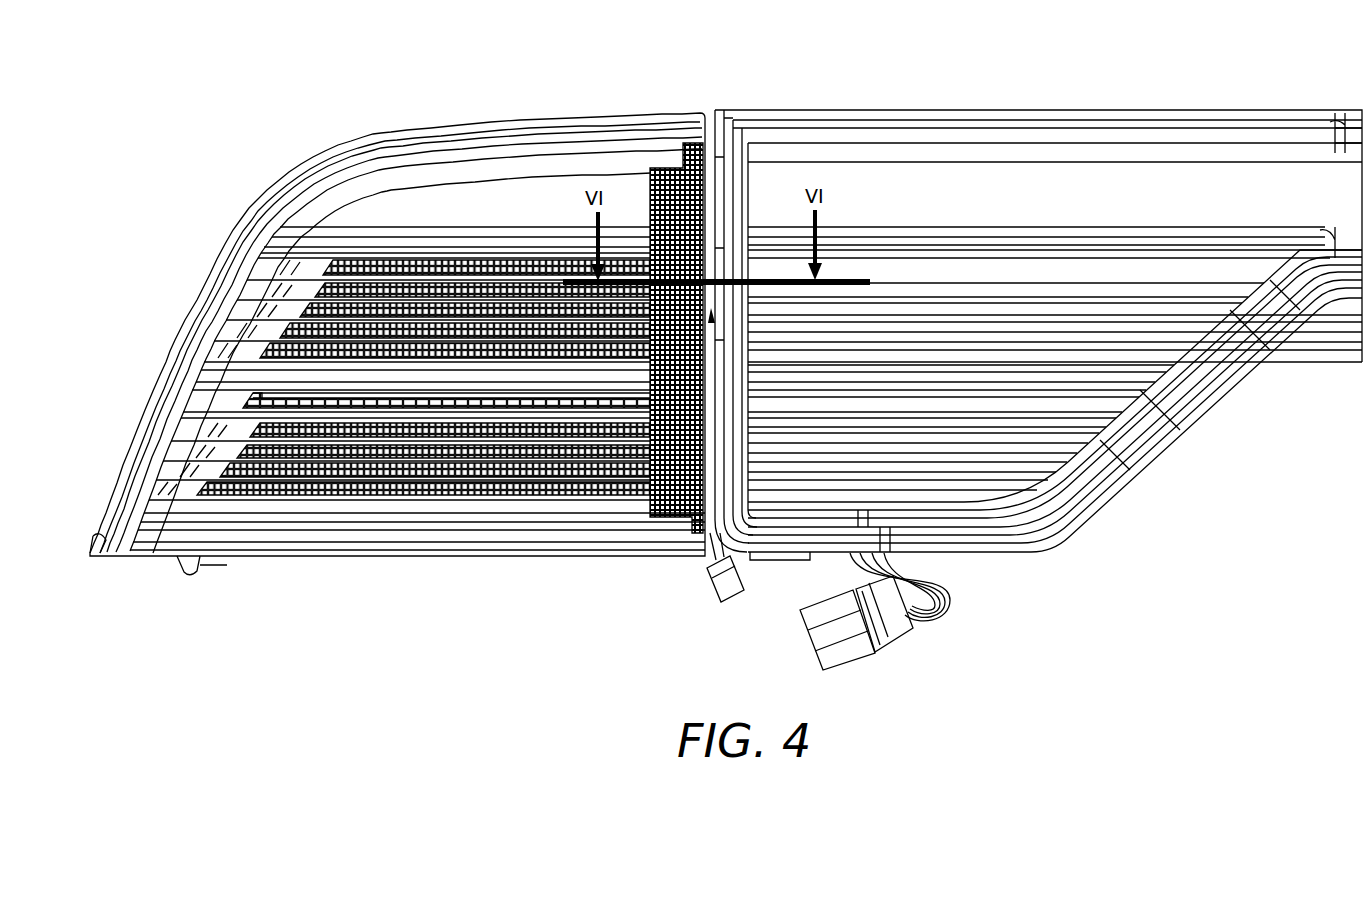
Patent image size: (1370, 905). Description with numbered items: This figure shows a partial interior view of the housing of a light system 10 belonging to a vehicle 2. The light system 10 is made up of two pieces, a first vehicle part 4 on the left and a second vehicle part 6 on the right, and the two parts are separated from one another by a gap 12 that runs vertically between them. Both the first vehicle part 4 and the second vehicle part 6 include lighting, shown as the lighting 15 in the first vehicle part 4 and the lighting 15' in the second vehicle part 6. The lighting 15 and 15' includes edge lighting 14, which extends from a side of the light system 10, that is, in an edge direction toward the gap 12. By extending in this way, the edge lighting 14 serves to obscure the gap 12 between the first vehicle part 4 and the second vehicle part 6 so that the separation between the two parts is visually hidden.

The vehicle 2 is at (262, 74).
The light system 10 is at (270, 150).
The first vehicle part 4 is at (527, 118).
The gap 12 is at (712, 92).
The second vehicle part 6 is at (966, 118).
The lighting 15 is at (652, 377).
The edge lighting 14 is at (692, 520).
The lighting 15' is at (847, 505).